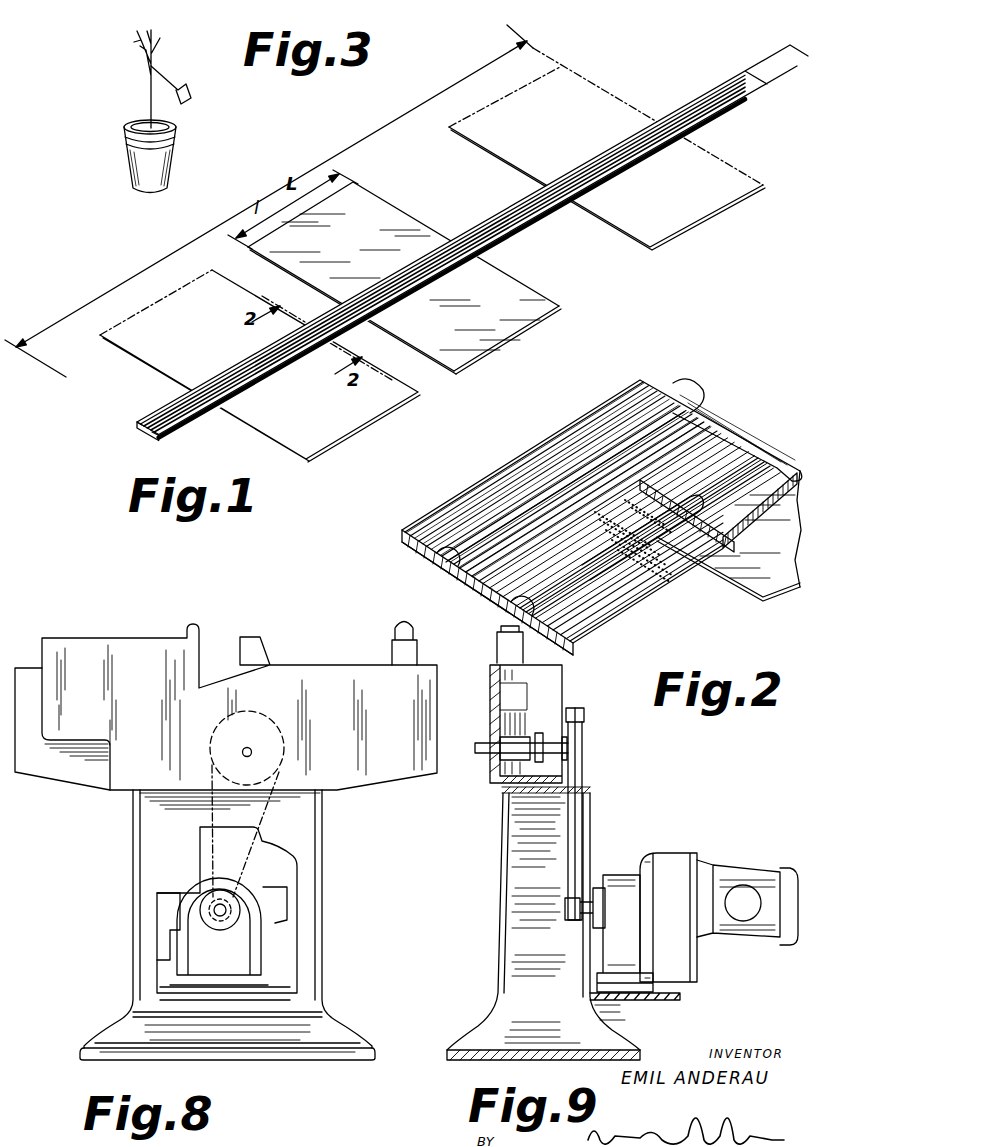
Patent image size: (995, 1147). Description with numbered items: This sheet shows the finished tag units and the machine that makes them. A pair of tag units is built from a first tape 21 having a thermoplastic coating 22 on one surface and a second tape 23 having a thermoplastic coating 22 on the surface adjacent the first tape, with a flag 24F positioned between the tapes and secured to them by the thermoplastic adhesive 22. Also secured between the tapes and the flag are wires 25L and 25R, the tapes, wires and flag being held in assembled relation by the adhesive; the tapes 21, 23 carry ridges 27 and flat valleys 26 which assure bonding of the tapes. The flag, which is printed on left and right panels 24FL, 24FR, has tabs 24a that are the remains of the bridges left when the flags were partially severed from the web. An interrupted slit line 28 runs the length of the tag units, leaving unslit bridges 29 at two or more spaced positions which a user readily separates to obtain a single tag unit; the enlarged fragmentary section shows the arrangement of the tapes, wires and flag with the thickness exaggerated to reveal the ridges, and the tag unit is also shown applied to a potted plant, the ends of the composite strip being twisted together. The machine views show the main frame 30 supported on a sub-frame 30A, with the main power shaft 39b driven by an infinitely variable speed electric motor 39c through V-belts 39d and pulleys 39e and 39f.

In FIG. 1, the first tape 21 is at (156, 442).
In FIG. 2, the first tape 21 is at (403, 545).
In FIG. 2, the thermo-plastic coating 22 is at (670, 572).
In FIG. 1, the second tape 23 is at (148, 414).
In FIG. 2, the second tape 23 is at (443, 503).
In FIG. 3, the flag 24F is at (193, 100).
In FIG. 1, the flag 24F is at (521, 333).
In FIG. 1, the left panel of blank 24FL is at (392, 203).
In FIG. 1, the right panel of blank 24FR is at (510, 277).
In FIG. 2, the right panel of blank 24FR is at (737, 588).
In FIG. 1, the tab 24a is at (272, 268).
In FIG. 1, the wire 25L is at (137, 426).
In FIG. 2, the wire 25L is at (430, 557).
In FIG. 1, the wire 25R is at (152, 437).
In FIG. 2, the wire 25R is at (522, 602).
In FIG. 2, the flat valley 26 is at (650, 388).
In FIG. 2, the ridge 27 is at (703, 417).
In FIG. 1, the interrupted slit line 28 is at (196, 396).
In FIG. 2, the interrupted slit line 28 is at (727, 427).
In FIG. 1, the bridge 29 is at (176, 411).
In FIG. 8, the main frame 30 is at (360, 775).
In FIG. 9, the main frame 30 is at (496, 780).
In FIG. 8, the sub-frame 30A is at (307, 877).
In FIG. 9, the sub-frame 30A is at (500, 897).
In FIG. 8, the main power shaft 39b is at (258, 733).
In FIG. 9, the main power shaft 39b is at (568, 748).
In FIG. 8, the electric motor 39c is at (240, 974).
In FIG. 9, the electric motor 39c is at (618, 877).
In FIG. 8, the V-belt 39d is at (263, 827).
In FIG. 9, the V-belt 39d is at (579, 823).
In FIG. 8, the pulley 39e is at (214, 916).
In FIG. 9, the pulley 39e is at (563, 918).
In FIG. 8, the pulley 39f is at (277, 712).
In FIG. 9, the pulley 39f is at (583, 716).